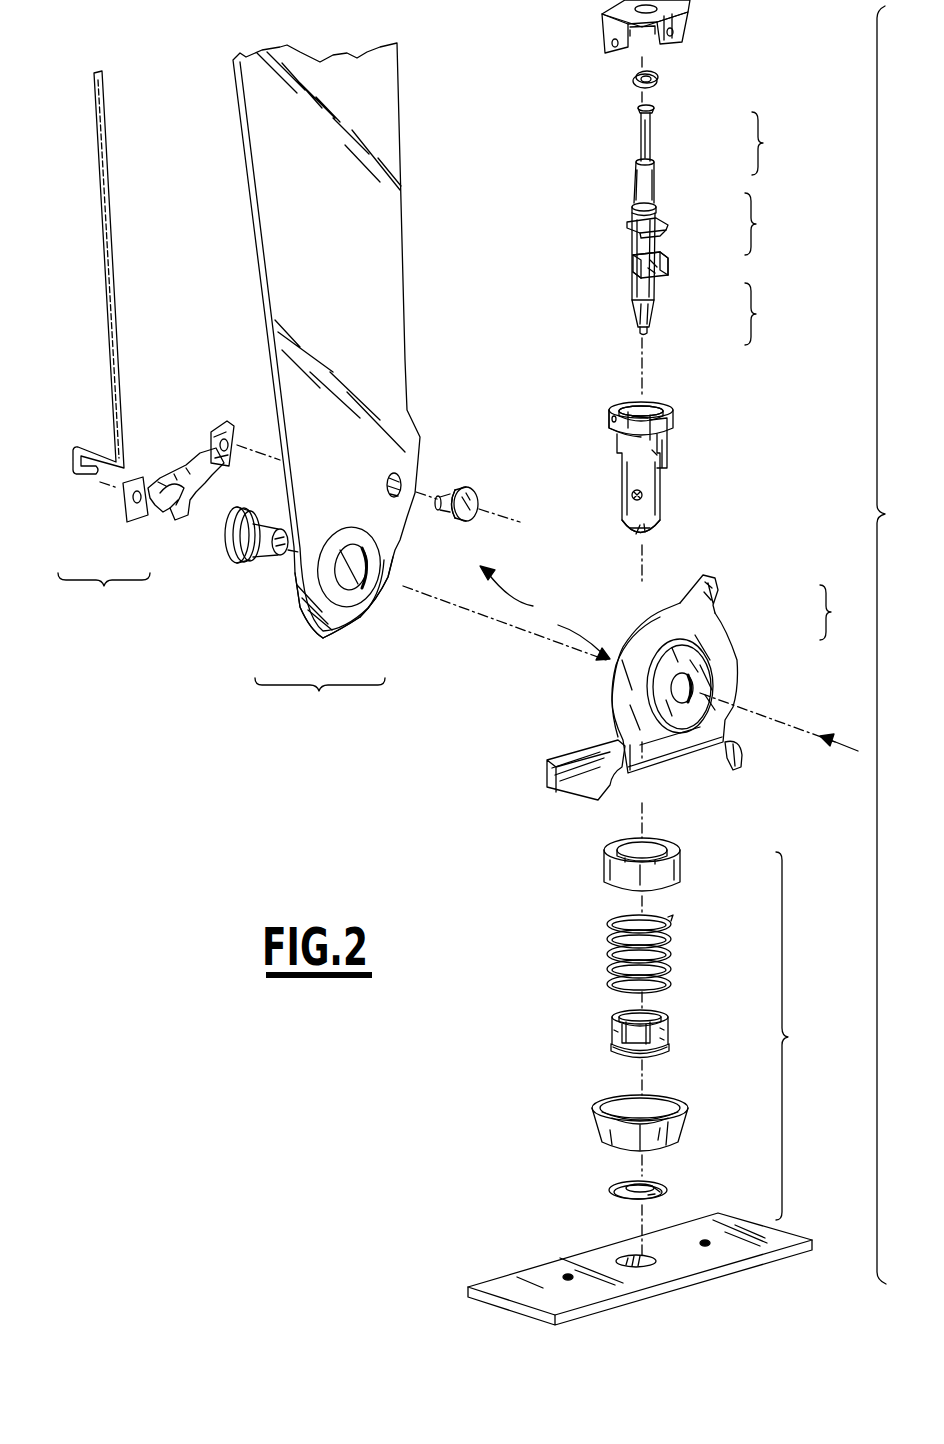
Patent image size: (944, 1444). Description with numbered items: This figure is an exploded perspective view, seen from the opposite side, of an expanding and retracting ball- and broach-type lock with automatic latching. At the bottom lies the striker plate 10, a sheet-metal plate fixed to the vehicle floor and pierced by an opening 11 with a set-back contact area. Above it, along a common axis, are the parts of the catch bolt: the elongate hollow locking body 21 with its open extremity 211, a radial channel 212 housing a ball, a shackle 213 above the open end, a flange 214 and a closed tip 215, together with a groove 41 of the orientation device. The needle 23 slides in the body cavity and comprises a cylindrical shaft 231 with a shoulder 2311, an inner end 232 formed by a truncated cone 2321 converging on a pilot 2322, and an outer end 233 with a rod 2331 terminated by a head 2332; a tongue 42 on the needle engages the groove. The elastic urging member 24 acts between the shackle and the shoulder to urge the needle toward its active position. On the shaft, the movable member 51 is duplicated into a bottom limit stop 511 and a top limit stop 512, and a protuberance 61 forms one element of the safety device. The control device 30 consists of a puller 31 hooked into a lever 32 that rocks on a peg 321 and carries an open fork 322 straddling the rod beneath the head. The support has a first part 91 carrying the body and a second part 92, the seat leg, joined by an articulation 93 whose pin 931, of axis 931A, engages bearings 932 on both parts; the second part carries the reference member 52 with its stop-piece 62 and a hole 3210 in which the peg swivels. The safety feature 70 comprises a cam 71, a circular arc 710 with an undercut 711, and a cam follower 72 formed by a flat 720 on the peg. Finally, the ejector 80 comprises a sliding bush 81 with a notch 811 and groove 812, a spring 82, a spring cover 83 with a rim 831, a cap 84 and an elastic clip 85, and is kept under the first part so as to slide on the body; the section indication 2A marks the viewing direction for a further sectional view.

The striker plate 10 is at (639, 1261).
The opening 11 is at (634, 1258).
The locking body 21 is at (643, 455).
The needle 23 is at (668, 225).
The elastic urging member 24 is at (659, 87).
The control device 30 is at (104, 600).
The puller 31 is at (80, 486).
The lever 32 is at (174, 474).
The groove 41 is at (669, 441).
The tongue 42 is at (641, 264).
The movable member 51 is at (705, 235).
The reference member 52 is at (382, 606).
The protuberance 61 is at (667, 275).
The stop-piece 62 is at (392, 618).
The safety feature 70 is at (545, 613).
The cam 71 is at (735, 674).
The cam follower 72 is at (466, 519).
The ejector 80 is at (707, 1016).
The sliding bush 81 is at (682, 1033).
The spring 82 is at (676, 962).
The spring cover 83 is at (676, 853).
The cap 84 is at (686, 1130).
The elastic clip 85 is at (668, 1185).
The first part 91 is at (582, 760).
The second part 92 is at (381, 238).
The articulation 93 is at (305, 617).
The open extremity 211 is at (650, 412).
The channel 212 is at (632, 496).
The shackle 213 is at (690, 30).
The flange 214 is at (613, 437).
The tip 215 is at (657, 528).
The cylindrical shaft 231 is at (633, 240).
The inner end 232 is at (715, 314).
The outer end 233 is at (721, 142).
The peg 321 is at (438, 506).
The open fork 322 is at (183, 442).
The bottom limit stop 511 is at (668, 262).
The top limit stop 512 is at (666, 228).
The circular arc 710 is at (738, 656).
The undercut 711 is at (719, 590).
The flat 720 is at (460, 517).
The notch 811 is at (669, 1032).
The groove 812 is at (664, 1052).
The rim 831 is at (656, 846).
The pin 931 is at (256, 562).
The bearings 932 is at (349, 572).
The shoulder 2311 is at (661, 220).
The truncated cone 2321 is at (656, 306).
The pilot 2322 is at (649, 331).
The rod 2331 is at (651, 158).
The head 2332 is at (653, 111).
The hole 3210 is at (404, 484).
The axis 931A is at (405, 597).
The view direction 2A is at (843, 770).